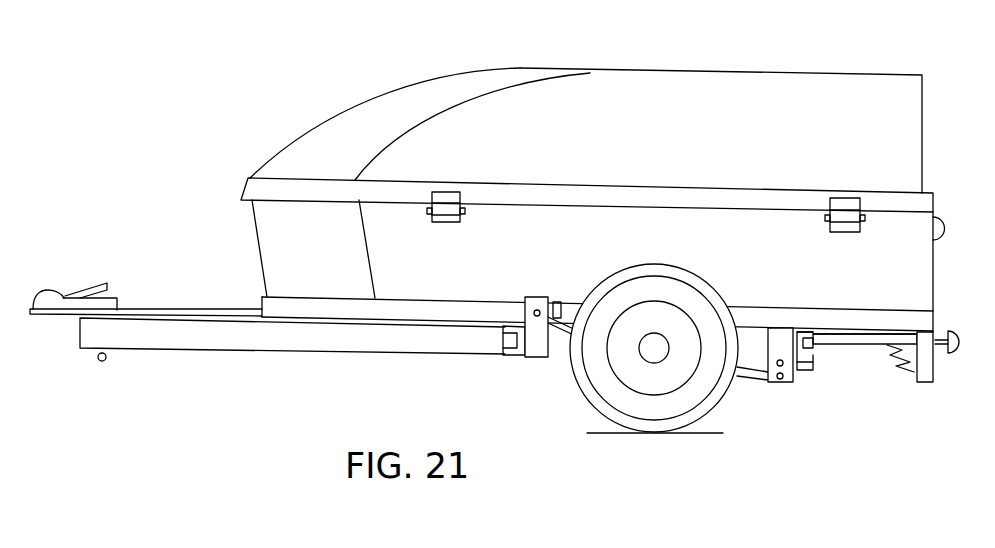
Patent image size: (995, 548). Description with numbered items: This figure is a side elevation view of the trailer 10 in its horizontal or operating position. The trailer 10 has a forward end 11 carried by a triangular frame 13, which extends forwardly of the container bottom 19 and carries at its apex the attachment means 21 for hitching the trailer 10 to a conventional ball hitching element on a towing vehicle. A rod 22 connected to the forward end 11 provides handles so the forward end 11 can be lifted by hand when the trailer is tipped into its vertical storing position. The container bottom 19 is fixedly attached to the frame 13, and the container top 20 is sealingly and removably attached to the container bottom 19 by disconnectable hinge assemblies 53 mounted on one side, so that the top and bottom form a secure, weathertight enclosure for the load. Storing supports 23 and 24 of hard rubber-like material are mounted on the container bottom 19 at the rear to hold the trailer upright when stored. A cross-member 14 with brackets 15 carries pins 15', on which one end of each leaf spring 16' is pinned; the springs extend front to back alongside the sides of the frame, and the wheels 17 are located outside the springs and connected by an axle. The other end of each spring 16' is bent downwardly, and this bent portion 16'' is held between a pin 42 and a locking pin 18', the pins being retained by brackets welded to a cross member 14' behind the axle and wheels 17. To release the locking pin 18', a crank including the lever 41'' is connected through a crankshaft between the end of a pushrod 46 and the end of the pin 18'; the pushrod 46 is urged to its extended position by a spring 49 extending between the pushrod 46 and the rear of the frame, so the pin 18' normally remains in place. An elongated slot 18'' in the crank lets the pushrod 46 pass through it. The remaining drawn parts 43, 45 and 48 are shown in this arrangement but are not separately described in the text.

The trailer 10 is at (659, 441).
The forward end 11 is at (80, 330).
The triangular frame 13 is at (313, 296).
The cross-member 14 is at (492, 355).
The cross member 14' is at (865, 302).
The bracket 15 is at (522, 354).
The pin 15' is at (511, 270).
The leaf spring 16' is at (577, 292).
The bent portion 16'' is at (755, 403).
The wheel 17 is at (585, 392).
The pin 18' is at (782, 311).
The elongated slot 18'' is at (812, 327).
The container bottom 19 is at (547, 238).
The container top 20 is at (772, 92).
The attachment means 21 is at (63, 295).
The rod 22 is at (106, 359).
The storing support 23 is at (934, 360).
The storing support 24 is at (941, 217).
The lever 41'' is at (807, 404).
The pin 42 is at (777, 382).
The channel bracket 43 is at (823, 355).
The nut 45 is at (840, 346).
The pushrod 46 is at (870, 346).
The crank handle 48 is at (954, 331).
The spring 49 is at (917, 372).
The disconnectable hinge assembly 53 is at (463, 212).